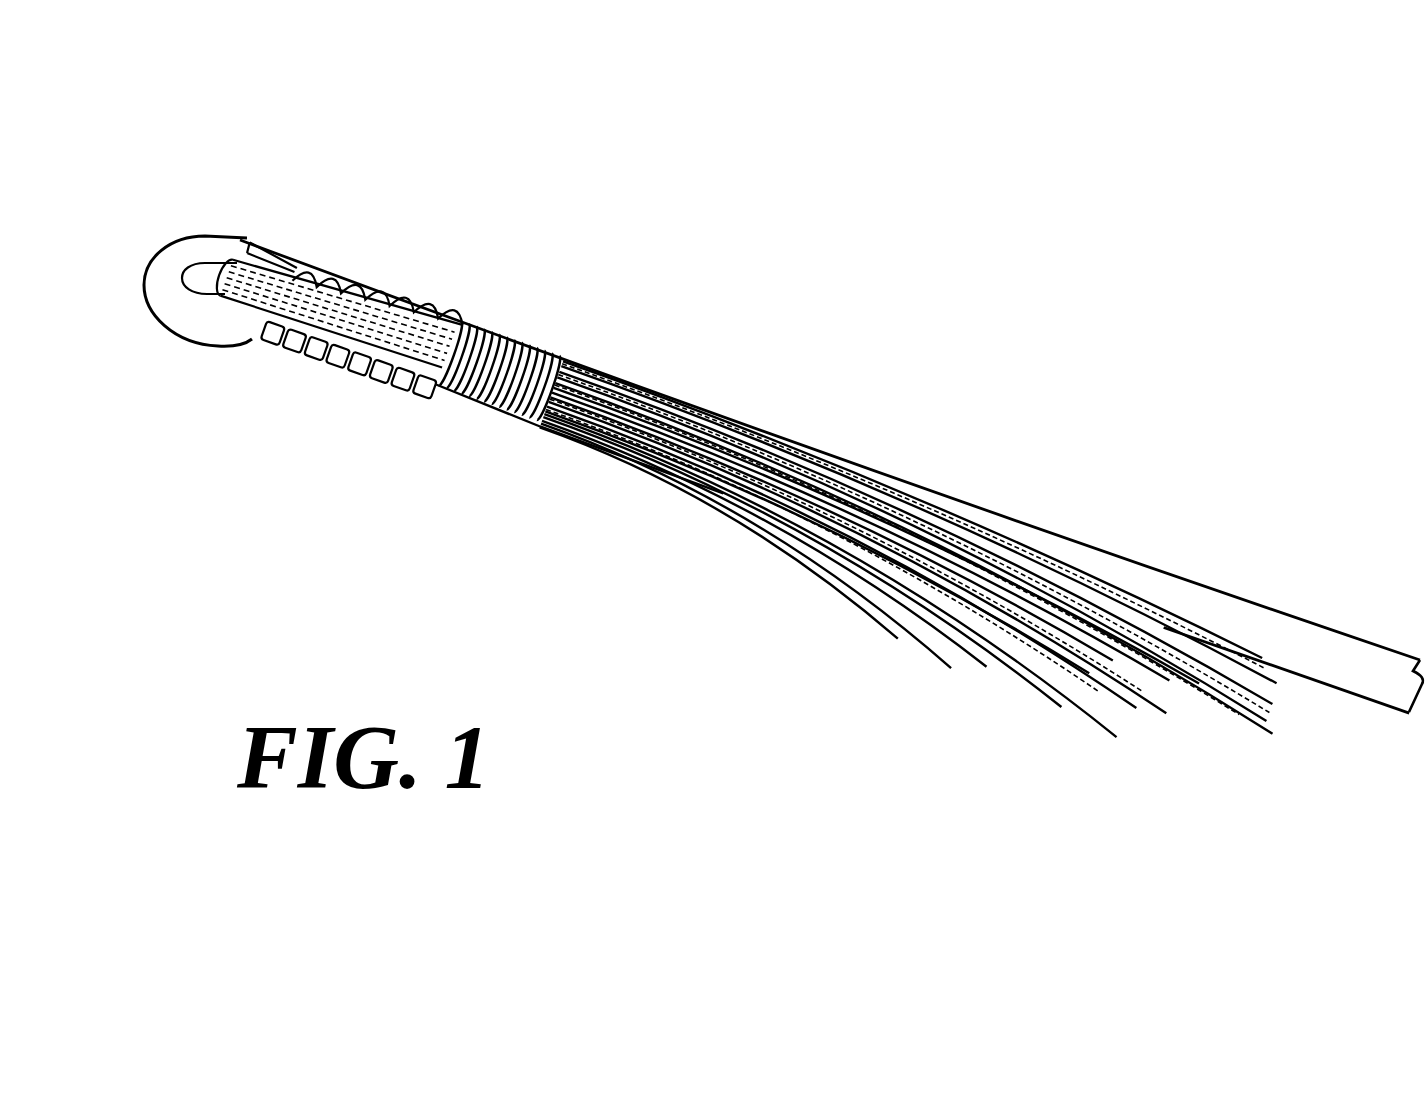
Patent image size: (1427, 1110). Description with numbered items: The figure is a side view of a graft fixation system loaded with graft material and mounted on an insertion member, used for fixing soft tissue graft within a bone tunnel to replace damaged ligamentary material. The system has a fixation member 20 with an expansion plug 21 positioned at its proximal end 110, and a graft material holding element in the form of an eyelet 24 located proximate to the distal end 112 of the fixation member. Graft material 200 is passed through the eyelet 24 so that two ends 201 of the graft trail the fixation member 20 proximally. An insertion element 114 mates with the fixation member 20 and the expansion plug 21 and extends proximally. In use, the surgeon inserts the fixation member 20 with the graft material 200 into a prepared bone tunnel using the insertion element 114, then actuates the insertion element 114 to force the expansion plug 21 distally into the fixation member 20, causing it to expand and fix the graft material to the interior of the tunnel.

The fixation member 20 is at (287, 220).
The expansion plug 21 is at (519, 311).
The eyelet 24 is at (192, 277).
The proximal end 110 is at (468, 318).
The distal end 112 is at (156, 251).
The insertion element 114 is at (1078, 537).
The graft material 200 is at (737, 527).
The ends of the graft 201 is at (1087, 720).